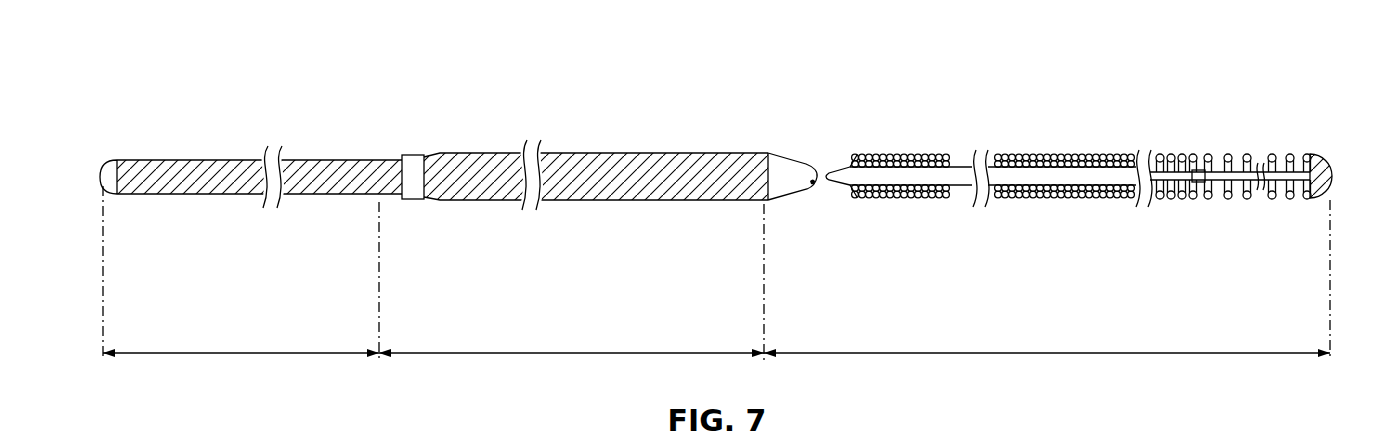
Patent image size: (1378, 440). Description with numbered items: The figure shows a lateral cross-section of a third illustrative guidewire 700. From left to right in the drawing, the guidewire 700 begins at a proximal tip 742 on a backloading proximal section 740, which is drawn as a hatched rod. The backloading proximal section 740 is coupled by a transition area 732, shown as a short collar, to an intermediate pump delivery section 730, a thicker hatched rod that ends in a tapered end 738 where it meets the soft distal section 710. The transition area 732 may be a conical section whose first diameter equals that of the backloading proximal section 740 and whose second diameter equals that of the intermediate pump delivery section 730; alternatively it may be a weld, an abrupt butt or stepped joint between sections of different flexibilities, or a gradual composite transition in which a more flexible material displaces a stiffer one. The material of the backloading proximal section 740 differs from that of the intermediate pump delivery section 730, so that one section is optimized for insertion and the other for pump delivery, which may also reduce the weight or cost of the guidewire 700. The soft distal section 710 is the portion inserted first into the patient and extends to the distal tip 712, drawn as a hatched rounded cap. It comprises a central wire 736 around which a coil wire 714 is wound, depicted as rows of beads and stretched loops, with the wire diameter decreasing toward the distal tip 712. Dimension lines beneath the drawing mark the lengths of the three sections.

The guidewire 700 is at (208, 58).
The proximal tip 742 is at (112, 172).
The backloading proximal section 740 is at (225, 172).
The transition area 732 is at (413, 186).
The intermediate pump delivery section 730 is at (592, 172).
The tapered tip 738 is at (785, 183).
The soft distal section 710 is at (1077, 158).
The core wire 736 is at (960, 175).
The coil wire 714 is at (1190, 194).
The distal tip 712 is at (1330, 170).